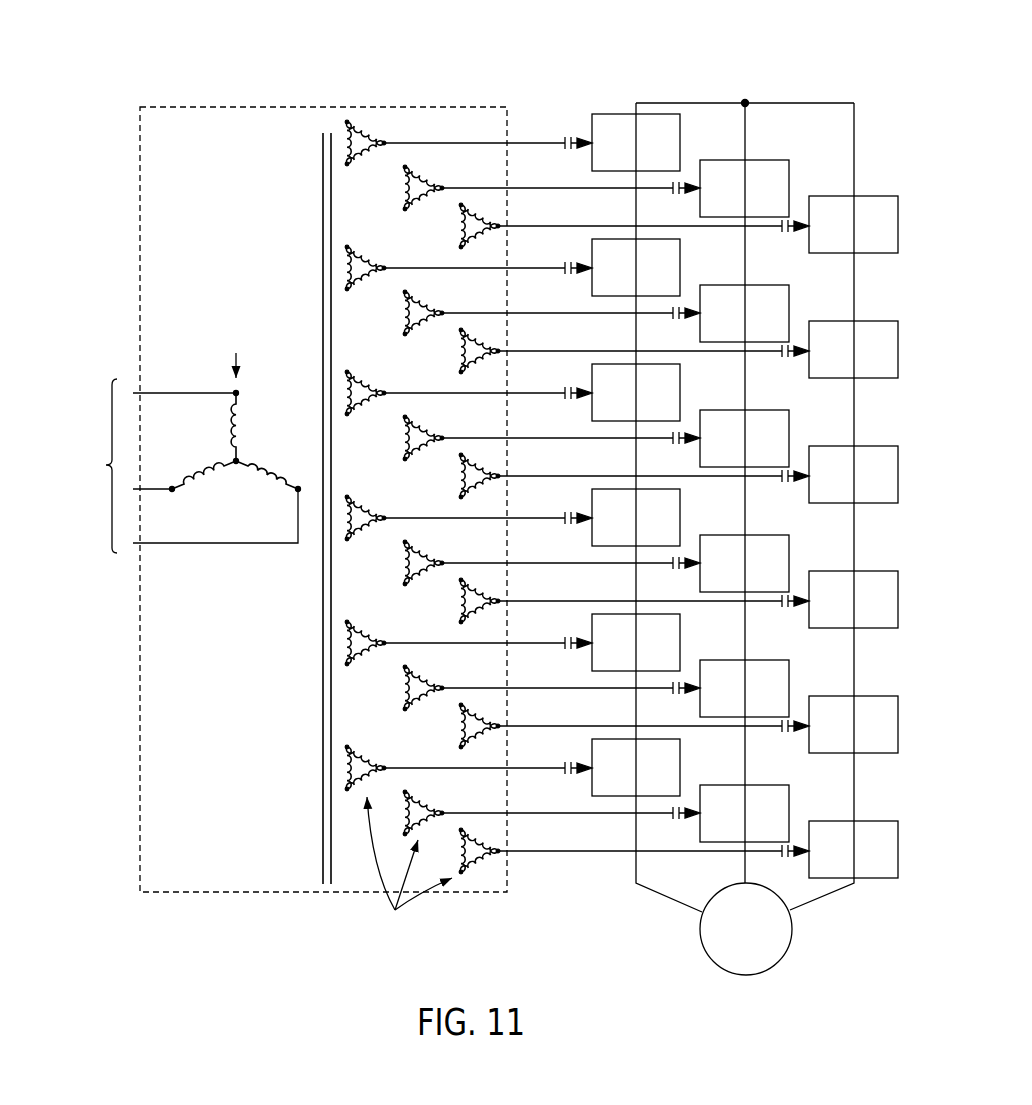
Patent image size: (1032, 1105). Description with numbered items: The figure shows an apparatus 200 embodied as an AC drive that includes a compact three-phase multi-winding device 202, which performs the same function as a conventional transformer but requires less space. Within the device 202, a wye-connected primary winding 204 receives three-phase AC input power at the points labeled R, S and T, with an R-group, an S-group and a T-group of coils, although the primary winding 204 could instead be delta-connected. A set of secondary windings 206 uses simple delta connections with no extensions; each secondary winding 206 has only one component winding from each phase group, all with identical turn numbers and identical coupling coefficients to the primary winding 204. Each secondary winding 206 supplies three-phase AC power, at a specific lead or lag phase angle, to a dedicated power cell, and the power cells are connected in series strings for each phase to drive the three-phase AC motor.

The apparatus 200 is at (286, 56).
The compact three-phase multi-winding device 202 is at (138, 156).
The primary winding 204 is at (237, 280).
The secondary windings 206 is at (502, 100).